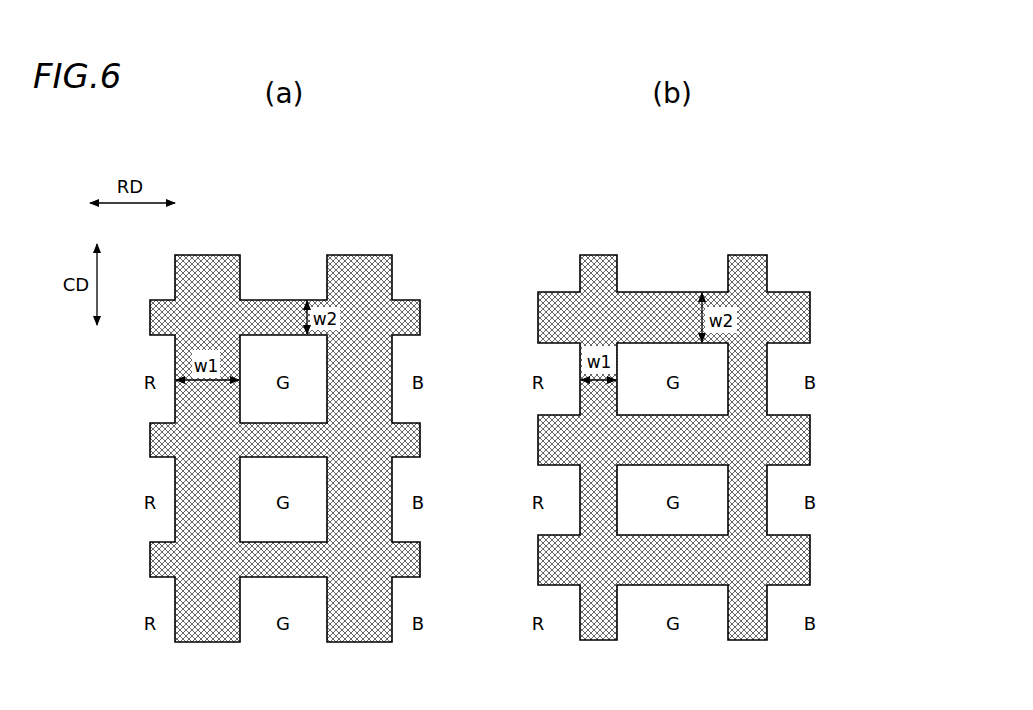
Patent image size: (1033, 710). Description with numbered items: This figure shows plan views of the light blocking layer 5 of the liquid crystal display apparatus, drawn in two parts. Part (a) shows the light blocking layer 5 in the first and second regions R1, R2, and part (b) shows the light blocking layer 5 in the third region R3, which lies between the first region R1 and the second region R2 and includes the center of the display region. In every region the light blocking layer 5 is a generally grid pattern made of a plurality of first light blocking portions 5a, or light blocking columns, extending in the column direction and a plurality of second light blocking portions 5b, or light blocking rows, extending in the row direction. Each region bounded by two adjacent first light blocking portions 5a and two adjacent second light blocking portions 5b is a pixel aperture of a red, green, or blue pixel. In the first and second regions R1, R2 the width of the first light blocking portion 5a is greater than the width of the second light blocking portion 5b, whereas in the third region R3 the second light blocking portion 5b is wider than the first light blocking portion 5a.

The light blocking layer 5 is at (479, 398).
The first light blocking portion 5a is at (208, 257).
The second light blocking portion 5b is at (197, 191).
The first region R1 is at (437, 243).
The second region R2 is at (285, 448).
The third region R3 is at (830, 243).